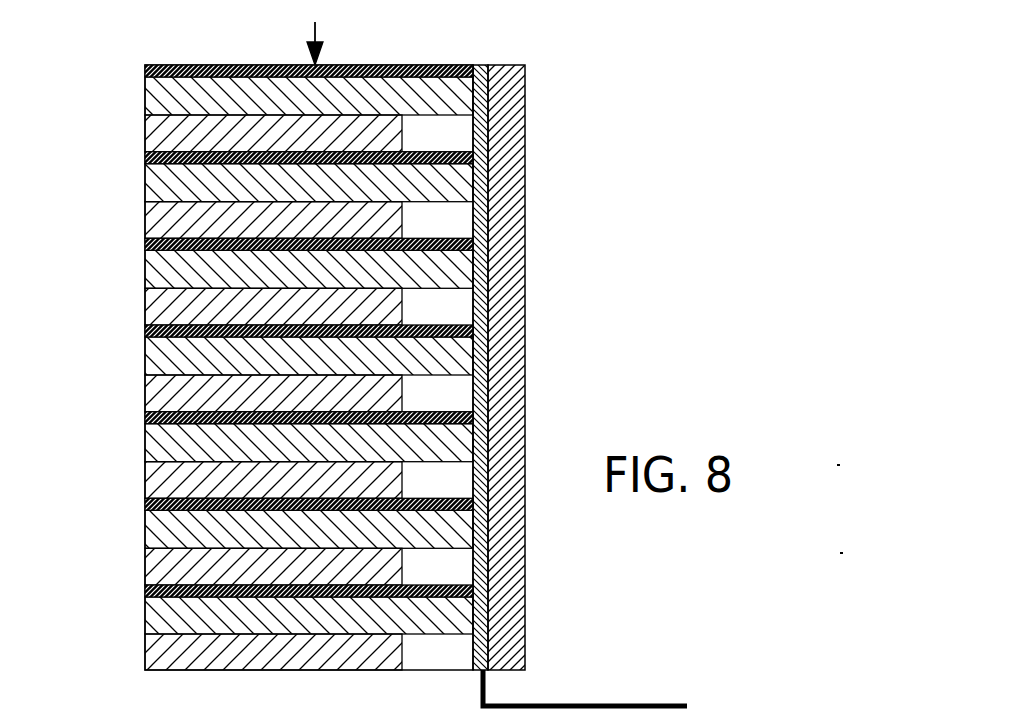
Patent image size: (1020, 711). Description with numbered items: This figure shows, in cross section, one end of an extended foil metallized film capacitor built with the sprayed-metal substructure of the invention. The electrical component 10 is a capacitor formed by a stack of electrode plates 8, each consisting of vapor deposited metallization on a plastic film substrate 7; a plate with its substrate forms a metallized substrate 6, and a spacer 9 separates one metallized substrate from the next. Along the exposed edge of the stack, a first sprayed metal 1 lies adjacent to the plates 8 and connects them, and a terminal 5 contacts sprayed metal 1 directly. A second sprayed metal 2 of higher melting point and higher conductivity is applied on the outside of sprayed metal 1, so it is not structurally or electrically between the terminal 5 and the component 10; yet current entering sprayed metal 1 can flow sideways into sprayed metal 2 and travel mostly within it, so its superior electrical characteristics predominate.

The sprayed metal 1 is at (480, 65).
The second sprayed metal 2 is at (527, 180).
The terminal 5 is at (603, 704).
The metallized substrate 6 is at (136, 72).
The plastic film substrate 7 is at (145, 107).
The electrode plate 8 is at (228, 65).
The spacer 9 is at (145, 135).
The electrical component 10 is at (315, 355).